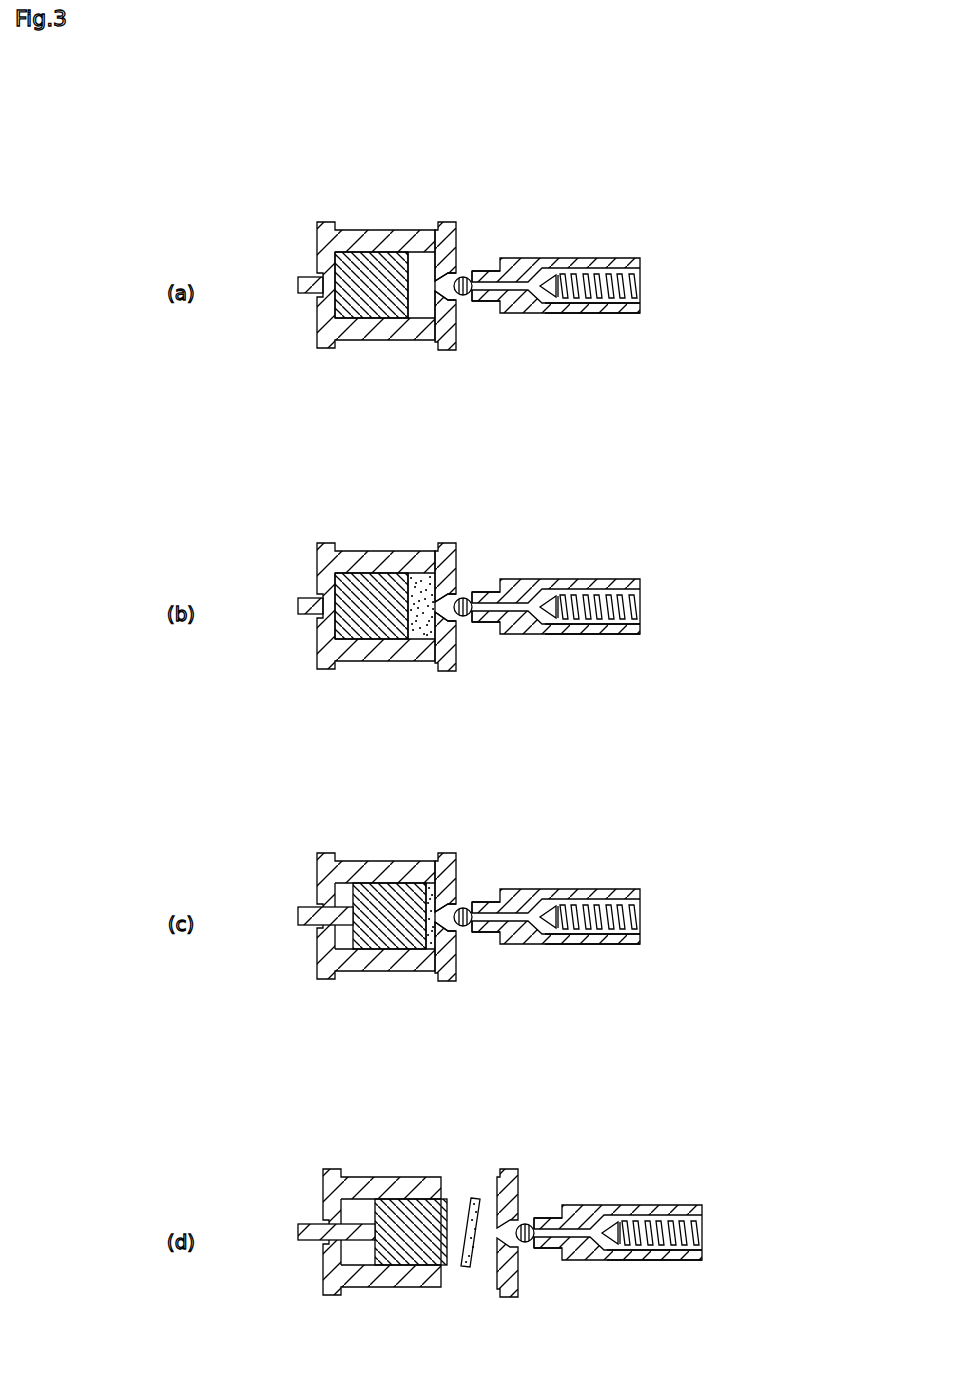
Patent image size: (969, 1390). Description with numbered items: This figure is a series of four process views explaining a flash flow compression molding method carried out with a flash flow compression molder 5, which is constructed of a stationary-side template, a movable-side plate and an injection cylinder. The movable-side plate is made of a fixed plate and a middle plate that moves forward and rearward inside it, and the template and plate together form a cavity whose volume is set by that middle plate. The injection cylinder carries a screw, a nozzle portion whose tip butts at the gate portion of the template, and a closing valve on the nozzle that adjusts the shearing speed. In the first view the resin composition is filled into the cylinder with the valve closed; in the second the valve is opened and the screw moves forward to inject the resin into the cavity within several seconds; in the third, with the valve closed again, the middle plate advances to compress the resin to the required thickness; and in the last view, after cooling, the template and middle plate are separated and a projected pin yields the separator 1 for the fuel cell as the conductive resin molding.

The separator 1 is at (474, 1198).
The flash flow compression molder 5 is at (616, 199).